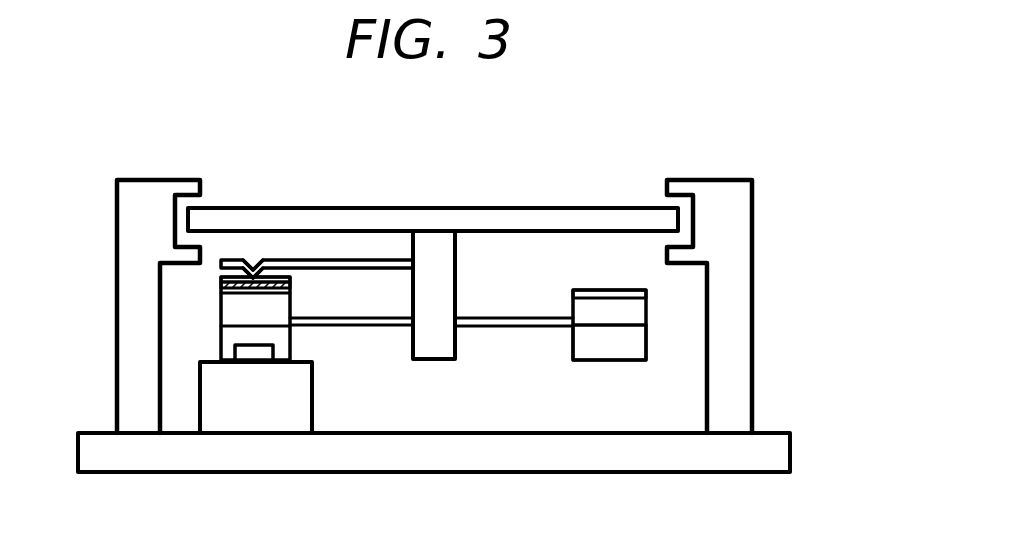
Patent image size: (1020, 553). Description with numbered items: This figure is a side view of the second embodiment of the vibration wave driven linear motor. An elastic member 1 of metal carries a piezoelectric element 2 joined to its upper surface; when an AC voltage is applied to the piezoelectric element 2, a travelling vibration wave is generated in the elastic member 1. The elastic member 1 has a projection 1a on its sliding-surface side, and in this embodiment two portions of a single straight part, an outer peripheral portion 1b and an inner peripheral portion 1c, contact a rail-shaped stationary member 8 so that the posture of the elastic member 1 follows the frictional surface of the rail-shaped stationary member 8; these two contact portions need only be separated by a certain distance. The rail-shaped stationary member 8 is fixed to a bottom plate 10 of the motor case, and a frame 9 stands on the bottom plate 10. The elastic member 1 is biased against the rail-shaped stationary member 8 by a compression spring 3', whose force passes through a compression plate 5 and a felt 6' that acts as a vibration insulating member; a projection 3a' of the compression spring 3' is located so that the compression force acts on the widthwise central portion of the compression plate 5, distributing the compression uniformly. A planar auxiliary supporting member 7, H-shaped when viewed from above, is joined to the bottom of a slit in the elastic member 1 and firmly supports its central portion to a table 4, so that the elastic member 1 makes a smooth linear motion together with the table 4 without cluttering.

The elastic member 1 is at (638, 310).
The projection 1a is at (618, 350).
The outer peripheral portion 1b is at (223, 340).
The inner peripheral portion 1c is at (283, 349).
The piezoelectric element 2 is at (603, 289).
The compression spring 3' is at (317, 216).
The projection of the compression spring 3a' is at (268, 204).
The table 4 is at (490, 218).
The compression plate 5 is at (220, 281).
The felt 6' is at (179, 306).
The auxiliary supporting member 7 is at (388, 326).
The rail-shaped stationary member 8 is at (268, 420).
The right frame 9 is at (740, 217).
The bottom plate 10 is at (740, 455).